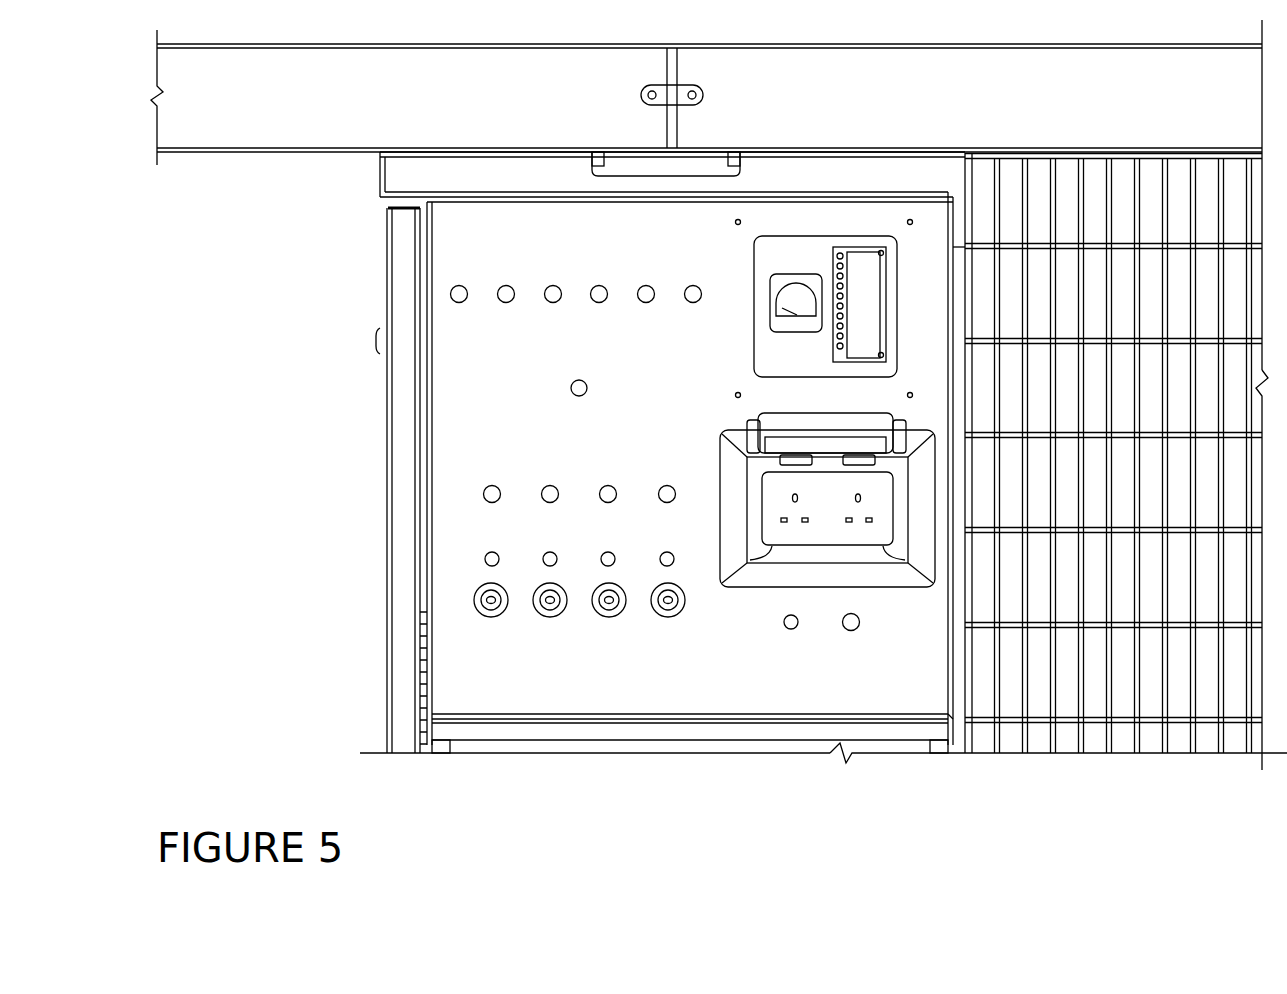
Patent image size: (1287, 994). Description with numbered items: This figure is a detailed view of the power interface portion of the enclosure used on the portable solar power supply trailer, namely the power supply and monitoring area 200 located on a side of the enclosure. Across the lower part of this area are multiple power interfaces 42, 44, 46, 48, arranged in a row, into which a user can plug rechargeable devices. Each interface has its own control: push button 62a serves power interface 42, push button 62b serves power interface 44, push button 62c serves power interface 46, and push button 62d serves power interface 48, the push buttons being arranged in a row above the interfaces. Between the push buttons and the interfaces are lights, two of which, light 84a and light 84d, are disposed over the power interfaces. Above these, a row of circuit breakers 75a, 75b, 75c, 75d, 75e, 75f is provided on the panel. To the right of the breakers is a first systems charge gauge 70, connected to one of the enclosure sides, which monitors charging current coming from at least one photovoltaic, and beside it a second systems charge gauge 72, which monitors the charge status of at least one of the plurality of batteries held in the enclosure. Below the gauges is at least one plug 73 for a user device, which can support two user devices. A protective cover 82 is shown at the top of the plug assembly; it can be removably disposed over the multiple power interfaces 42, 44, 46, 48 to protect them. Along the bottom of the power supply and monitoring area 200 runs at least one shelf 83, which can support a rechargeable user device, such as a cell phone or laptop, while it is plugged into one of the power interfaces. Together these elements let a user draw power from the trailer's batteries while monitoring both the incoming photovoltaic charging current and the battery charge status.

The power supply and monitoring area 200 is at (440, 238).
The circuit breaker 75a is at (465, 287).
The circuit breaker 75b is at (512, 300).
The circuit breaker 75c is at (559, 287).
The circuit breaker 75d is at (605, 300).
The circuit breaker 75e is at (652, 287).
The circuit breaker 75f is at (699, 300).
The first systems charge gauge 70 is at (792, 330).
The second systems charge gauge 72 is at (875, 299).
The protective cover 82 is at (748, 425).
The plug 73 is at (848, 535).
The push button 62a is at (486, 500).
The push button 62b is at (544, 500).
The push button 62c is at (602, 500).
The push button 62d is at (661, 500).
The light 84a is at (487, 565).
The mounting hole 84d is at (672, 553).
The power interface 42 is at (486, 608).
The power interface 44 is at (545, 608).
The power interface 46 is at (604, 608).
The power interface 48 is at (663, 608).
The shelf 83 is at (743, 712).